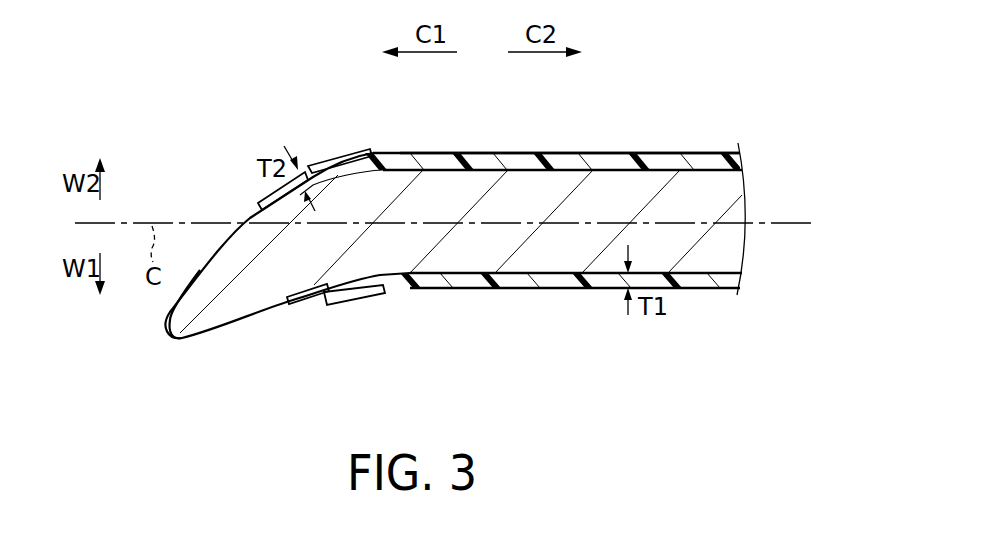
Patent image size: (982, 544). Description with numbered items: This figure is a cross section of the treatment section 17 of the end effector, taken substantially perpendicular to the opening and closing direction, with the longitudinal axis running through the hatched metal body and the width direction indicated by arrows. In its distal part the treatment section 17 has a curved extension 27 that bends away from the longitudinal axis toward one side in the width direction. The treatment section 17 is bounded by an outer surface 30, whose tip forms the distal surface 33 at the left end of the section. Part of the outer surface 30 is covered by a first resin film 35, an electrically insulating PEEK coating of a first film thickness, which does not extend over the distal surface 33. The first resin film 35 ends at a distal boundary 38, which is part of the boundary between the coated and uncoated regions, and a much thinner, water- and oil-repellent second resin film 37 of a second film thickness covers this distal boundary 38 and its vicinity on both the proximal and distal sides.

The treatment section 17 is at (586, 254).
The curved extension 27 is at (468, 190).
The outer surface 30 is at (531, 145).
The distal surface 33 is at (178, 338).
The first resin film 35 is at (618, 162).
The second resin film 37 is at (360, 148).
The distal boundary 38 is at (314, 334).